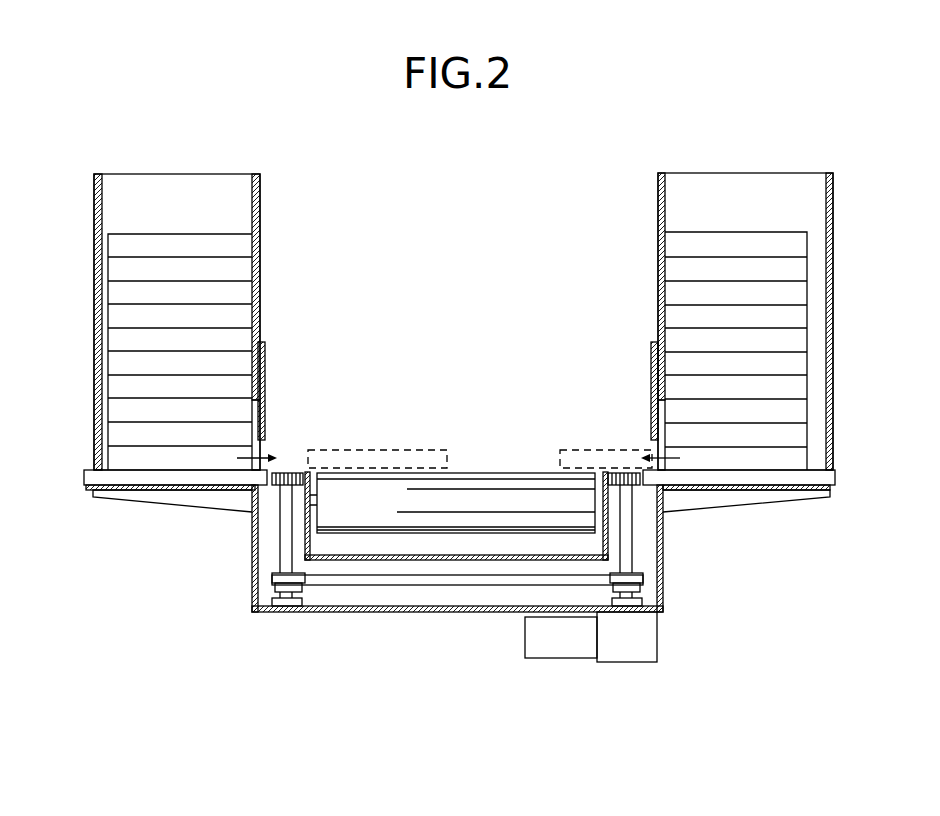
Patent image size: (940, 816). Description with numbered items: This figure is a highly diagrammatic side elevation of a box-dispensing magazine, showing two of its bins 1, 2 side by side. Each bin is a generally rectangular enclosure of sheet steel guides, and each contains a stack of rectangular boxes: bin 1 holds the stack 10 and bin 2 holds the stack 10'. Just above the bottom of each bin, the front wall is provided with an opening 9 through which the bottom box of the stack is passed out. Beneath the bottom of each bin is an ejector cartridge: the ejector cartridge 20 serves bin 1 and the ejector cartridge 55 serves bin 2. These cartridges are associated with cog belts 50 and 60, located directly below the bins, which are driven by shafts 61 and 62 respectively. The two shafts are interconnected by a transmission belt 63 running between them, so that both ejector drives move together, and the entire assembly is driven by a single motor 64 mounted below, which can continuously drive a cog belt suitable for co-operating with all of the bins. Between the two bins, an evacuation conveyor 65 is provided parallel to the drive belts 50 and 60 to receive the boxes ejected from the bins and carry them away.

The bin 1 is at (90, 190).
The bin 2 is at (840, 184).
The stack of rectangular boxes 10 is at (147, 344).
The stack of boxes 10' is at (788, 341).
The opening 9 is at (261, 450).
The ejector cartridge 20 is at (165, 476).
The cog belt 50 is at (289, 470).
The ejector cartridge 55 is at (787, 474).
The cog belt 60 is at (616, 470).
The shaft 61 is at (283, 510).
The shaft 62 is at (630, 546).
The transmission belt 63 is at (494, 580).
The motor 64 is at (638, 640).
The evacuation conveyor 65 is at (543, 485).